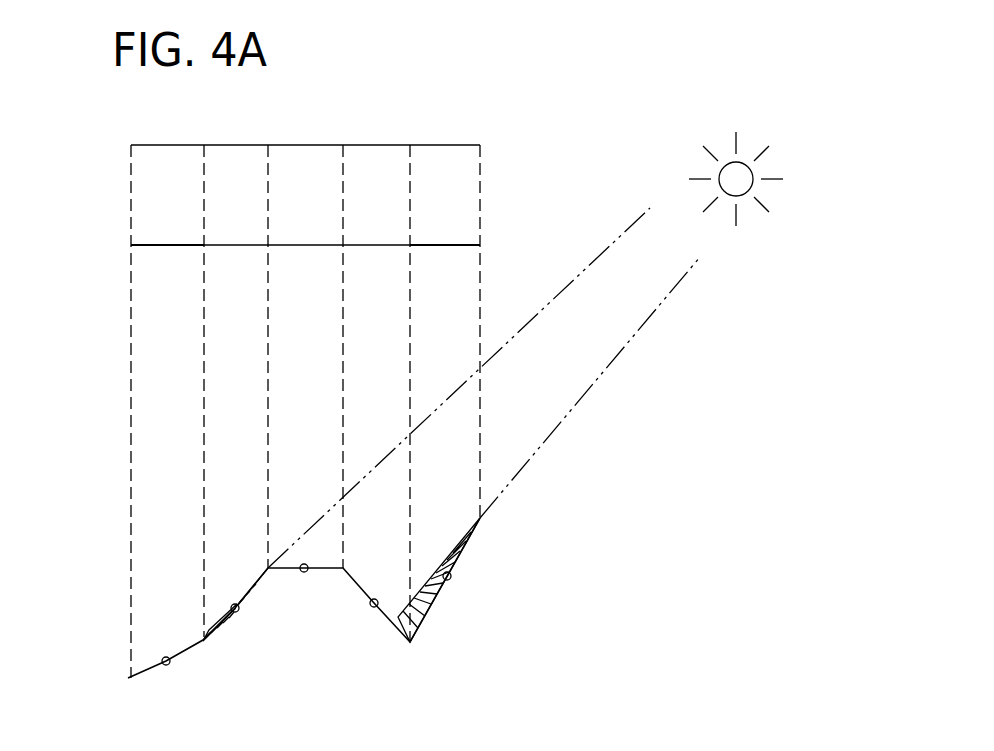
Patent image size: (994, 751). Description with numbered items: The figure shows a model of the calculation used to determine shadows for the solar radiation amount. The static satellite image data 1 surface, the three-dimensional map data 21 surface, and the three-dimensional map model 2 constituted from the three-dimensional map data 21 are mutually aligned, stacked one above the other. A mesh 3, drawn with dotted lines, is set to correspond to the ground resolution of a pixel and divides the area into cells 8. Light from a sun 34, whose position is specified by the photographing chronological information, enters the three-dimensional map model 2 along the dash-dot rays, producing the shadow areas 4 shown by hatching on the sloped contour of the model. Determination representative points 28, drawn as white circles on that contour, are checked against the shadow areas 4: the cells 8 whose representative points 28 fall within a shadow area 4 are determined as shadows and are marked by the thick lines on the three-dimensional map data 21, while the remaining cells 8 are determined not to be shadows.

The static satellite image data 1 is at (448, 145).
The three-dimensional map model 2 is at (147, 665).
The mesh 3 is at (485, 176).
The shadow area 4 is at (207, 637).
The cell 8 is at (407, 308).
The three-dimensional map data 21 is at (173, 245).
The determination representative point 28 is at (169, 665).
The sun 34 is at (790, 124).